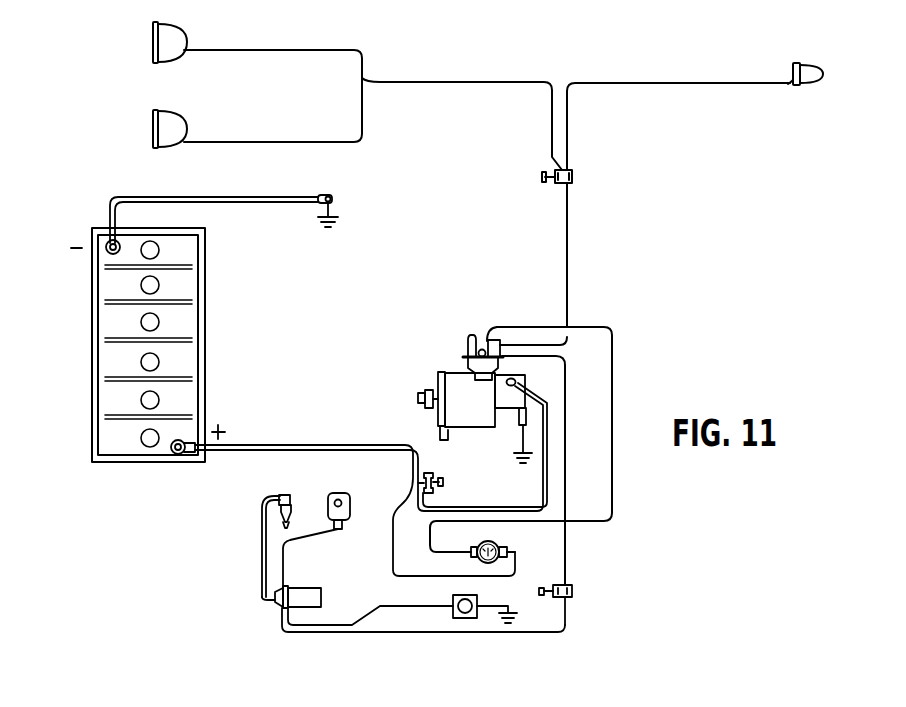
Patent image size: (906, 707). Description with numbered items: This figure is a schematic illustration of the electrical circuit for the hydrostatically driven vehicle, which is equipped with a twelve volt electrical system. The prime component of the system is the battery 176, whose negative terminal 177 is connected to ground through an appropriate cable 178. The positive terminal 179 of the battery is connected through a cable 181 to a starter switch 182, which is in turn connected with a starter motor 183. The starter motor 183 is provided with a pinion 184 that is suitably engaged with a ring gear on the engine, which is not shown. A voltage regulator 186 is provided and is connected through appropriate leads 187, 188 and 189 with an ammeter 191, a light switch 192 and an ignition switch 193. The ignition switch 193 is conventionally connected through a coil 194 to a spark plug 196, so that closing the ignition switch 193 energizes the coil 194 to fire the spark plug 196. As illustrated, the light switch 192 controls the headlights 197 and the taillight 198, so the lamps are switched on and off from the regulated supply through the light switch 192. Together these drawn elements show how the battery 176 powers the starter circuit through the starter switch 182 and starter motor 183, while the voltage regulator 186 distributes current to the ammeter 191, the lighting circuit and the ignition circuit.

The battery 176 is at (188, 320).
The negative terminal 177 is at (110, 251).
The cable 178 is at (253, 198).
The positive terminal 179 is at (177, 455).
The cable 181 is at (260, 446).
The starter switch 182 is at (434, 470).
The starter motor 183 is at (483, 410).
The pinion 184 is at (425, 390).
The voltage regulator 186 is at (481, 350).
The lead 187 is at (614, 331).
The lead 188 is at (567, 258).
The lead 189 is at (566, 471).
The ammeter 191 is at (500, 547).
The light switch 192 is at (573, 177).
The ignition switch 193 is at (573, 588).
The coil 194 is at (305, 593).
The spark plug 196 is at (283, 525).
The headlights 197 is at (172, 48).
The taillight 198 is at (792, 87).